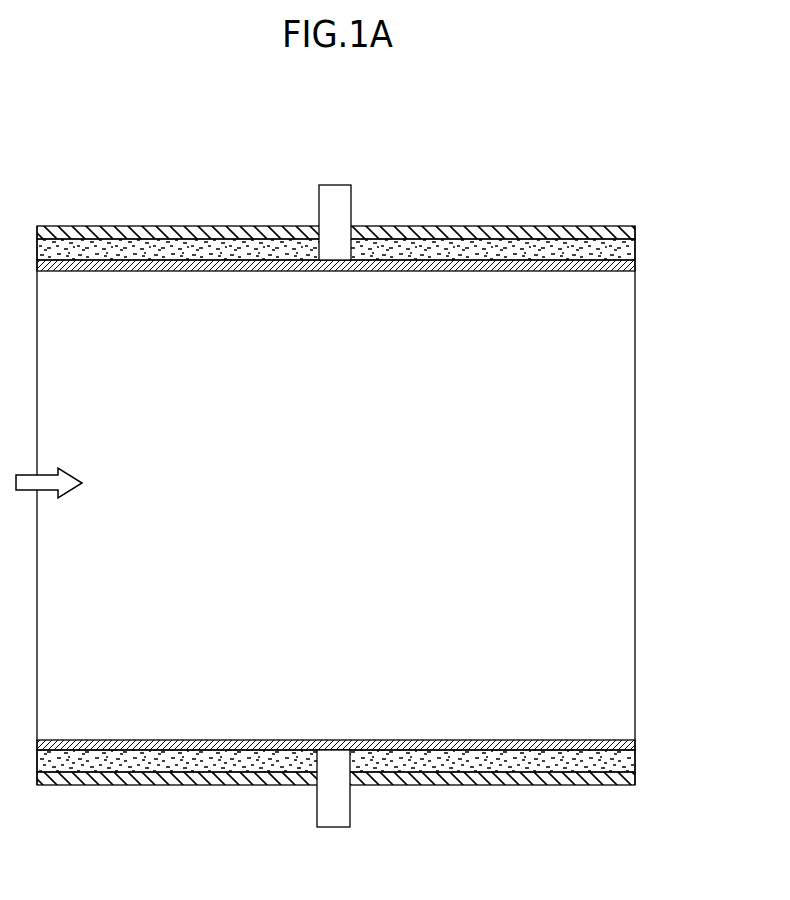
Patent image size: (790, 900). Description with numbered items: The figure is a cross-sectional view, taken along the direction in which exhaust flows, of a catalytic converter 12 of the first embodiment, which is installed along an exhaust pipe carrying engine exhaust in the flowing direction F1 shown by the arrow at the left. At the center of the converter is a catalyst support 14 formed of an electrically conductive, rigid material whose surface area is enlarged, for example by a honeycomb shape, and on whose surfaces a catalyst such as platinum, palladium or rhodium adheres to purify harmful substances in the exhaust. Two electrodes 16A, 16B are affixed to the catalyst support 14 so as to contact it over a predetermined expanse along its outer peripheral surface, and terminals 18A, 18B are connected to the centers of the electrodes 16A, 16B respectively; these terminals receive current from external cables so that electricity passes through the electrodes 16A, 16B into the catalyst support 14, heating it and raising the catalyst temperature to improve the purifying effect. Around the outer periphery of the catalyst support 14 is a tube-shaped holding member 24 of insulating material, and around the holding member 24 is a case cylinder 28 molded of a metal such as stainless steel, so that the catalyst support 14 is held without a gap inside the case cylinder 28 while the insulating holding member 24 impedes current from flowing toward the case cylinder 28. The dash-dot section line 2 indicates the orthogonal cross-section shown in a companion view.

The catalytic converter 12 is at (381, 523).
The catalyst support 14 is at (639, 329).
The electrode 16A is at (637, 268).
The electrode 16B is at (637, 742).
The terminal 18A is at (318, 192).
The terminal 18B is at (291, 797).
The holding member 24 is at (637, 762).
The case cylinder 28 is at (637, 232).
The exhaust flowing direction F1 is at (48, 472).
The section line 2- 2 is at (382, 188).